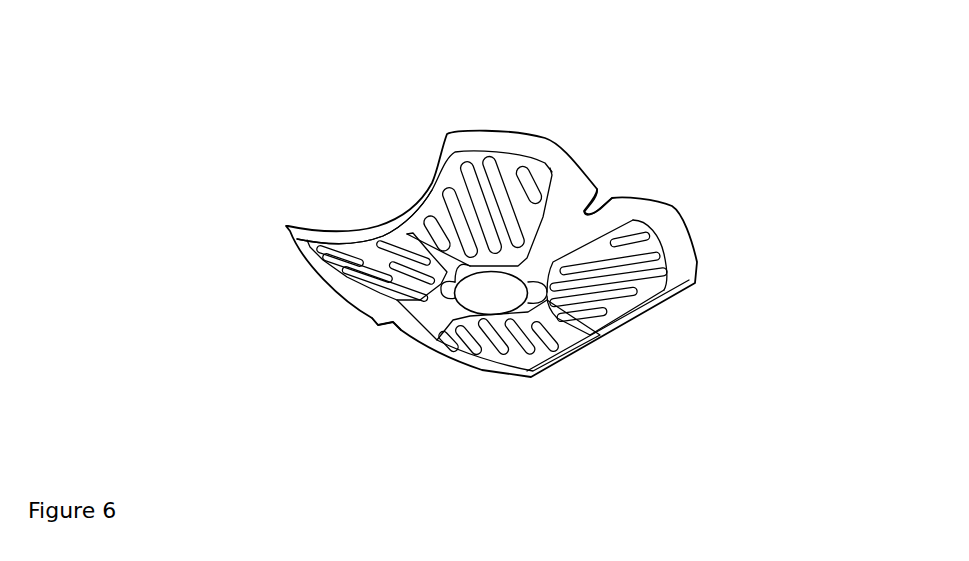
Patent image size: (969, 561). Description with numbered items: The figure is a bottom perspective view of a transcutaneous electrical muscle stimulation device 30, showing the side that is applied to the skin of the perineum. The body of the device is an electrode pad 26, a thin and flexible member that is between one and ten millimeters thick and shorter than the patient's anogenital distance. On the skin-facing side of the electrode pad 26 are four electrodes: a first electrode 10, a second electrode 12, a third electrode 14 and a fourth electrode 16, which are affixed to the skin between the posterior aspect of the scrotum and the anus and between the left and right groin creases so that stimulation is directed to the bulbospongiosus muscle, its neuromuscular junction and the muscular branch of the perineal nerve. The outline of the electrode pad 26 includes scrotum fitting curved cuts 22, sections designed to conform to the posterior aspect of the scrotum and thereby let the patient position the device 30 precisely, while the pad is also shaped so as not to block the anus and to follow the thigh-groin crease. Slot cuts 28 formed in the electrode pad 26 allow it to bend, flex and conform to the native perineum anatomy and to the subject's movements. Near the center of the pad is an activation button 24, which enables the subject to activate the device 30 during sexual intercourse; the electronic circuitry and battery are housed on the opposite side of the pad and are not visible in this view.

The first electrode 10 is at (305, 268).
The second electrode 12 is at (493, 355).
The third electrode 14 is at (487, 168).
The fourth electrode 16 is at (640, 275).
The scrotum fitting curved cuts 22 is at (430, 185).
The activation button 24 is at (498, 297).
The electrode pad 26 is at (295, 243).
The slot cuts 28 is at (380, 323).
The transcutaneous electrical muscle stimulation device 30 is at (295, 152).